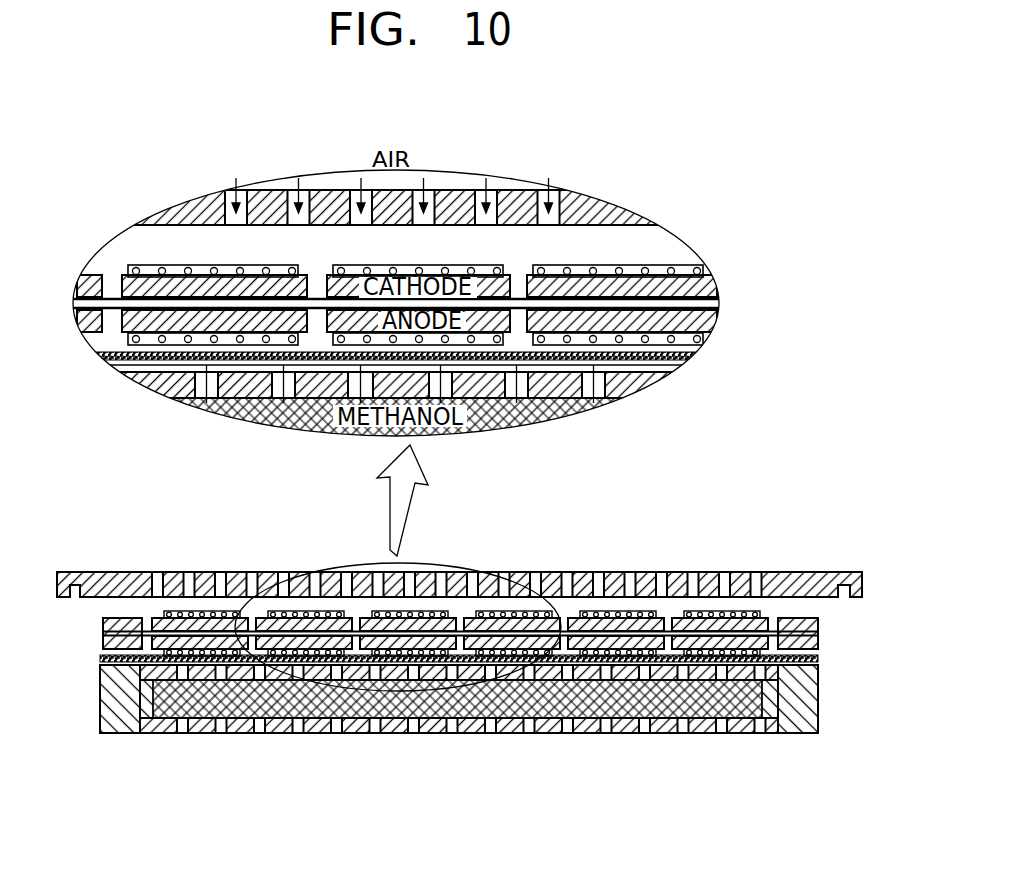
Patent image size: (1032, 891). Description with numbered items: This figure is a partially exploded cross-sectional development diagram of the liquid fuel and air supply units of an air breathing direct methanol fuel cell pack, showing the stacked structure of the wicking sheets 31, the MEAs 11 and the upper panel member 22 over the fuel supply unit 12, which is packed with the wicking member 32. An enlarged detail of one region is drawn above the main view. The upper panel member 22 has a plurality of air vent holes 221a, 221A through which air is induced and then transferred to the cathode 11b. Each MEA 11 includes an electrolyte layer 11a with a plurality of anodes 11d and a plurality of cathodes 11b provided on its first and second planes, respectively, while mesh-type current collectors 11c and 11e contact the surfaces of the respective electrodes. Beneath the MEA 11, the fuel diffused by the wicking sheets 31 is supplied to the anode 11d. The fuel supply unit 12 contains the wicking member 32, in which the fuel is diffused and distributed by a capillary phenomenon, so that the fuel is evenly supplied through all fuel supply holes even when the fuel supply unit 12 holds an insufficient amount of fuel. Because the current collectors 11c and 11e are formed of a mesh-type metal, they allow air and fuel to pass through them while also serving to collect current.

The upper panel member 22 is at (453, 192).
The air vent holes 221a is at (541, 195).
The air vent holes 221A is at (700, 572).
The MEA 11 is at (834, 631).
The electrolyte layer 11a is at (710, 303).
The cathode 11b is at (703, 286).
The current collector 11c is at (702, 268).
The anode 11d is at (704, 318).
The current collector 11e is at (700, 336).
The wicking sheet 31 is at (688, 354).
The fuel supply unit 12 is at (632, 383).
The wicking member 32 is at (528, 422).